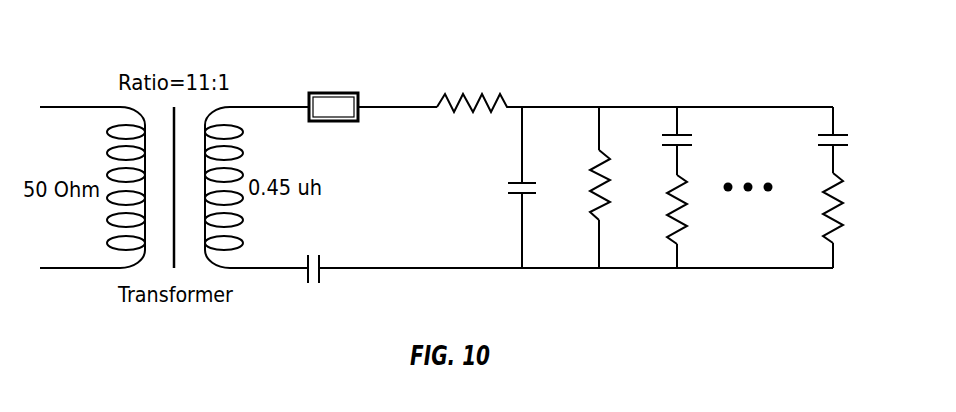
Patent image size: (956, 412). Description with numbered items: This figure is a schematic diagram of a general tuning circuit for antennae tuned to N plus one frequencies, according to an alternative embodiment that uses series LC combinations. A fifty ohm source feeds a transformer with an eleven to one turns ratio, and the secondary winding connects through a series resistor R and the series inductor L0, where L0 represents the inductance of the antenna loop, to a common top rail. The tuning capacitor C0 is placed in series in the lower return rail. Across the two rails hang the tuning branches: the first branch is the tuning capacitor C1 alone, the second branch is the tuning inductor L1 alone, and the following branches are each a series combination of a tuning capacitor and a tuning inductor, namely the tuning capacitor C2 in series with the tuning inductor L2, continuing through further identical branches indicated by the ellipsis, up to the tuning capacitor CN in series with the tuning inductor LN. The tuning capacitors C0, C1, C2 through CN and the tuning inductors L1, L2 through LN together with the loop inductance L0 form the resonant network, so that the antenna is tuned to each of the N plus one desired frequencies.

The series resistor R=0.473 Ohm R is at (352, 92).
The inductance of the antenna loop L0 is at (477, 87).
The tuning capacitor C0 is at (415, 287).
The tuning capacitor C1 is at (507, 187).
The tuning inductor L1 is at (587, 187).
The tuning capacitor C2 is at (663, 141).
The tuning inductor L2 is at (664, 221).
The tuning capacitor CN is at (818, 140).
The tuning inductor LN is at (820, 220).